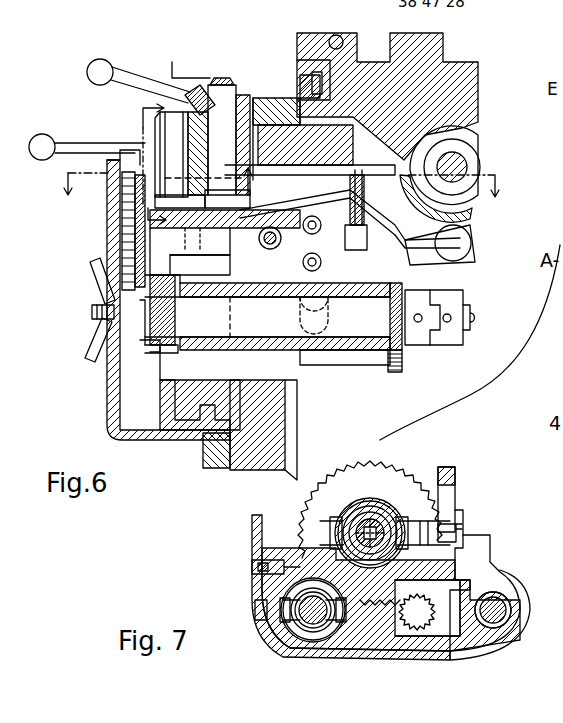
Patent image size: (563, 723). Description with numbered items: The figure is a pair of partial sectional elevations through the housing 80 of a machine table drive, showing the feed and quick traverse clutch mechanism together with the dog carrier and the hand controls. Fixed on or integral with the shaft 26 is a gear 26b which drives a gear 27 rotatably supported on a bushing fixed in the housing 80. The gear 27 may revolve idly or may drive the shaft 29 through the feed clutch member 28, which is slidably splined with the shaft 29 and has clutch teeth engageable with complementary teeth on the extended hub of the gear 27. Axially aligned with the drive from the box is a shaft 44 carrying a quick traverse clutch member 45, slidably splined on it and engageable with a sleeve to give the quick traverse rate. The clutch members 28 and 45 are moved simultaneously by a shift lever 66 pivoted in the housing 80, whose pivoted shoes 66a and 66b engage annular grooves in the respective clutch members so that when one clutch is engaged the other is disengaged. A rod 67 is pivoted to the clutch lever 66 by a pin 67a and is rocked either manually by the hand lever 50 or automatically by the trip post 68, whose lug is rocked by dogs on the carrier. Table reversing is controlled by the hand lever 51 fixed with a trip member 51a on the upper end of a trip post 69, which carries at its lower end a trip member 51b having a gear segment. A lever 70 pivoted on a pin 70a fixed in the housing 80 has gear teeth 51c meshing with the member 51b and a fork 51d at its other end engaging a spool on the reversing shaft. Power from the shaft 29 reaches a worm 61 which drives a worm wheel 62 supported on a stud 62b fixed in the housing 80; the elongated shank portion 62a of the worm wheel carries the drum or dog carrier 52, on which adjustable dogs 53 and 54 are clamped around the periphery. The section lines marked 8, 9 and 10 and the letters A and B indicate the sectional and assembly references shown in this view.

In FIG. 6, the section line / direction indicator 8 is at (146, 180).
In FIG. 6, the section line 9 is at (277, 181).
In FIG. 6, the direction indicator 10 is at (179, 160).
In FIG. 7, the shaft 26 is at (456, 625).
In FIG. 7, the gear 26b is at (445, 640).
In FIG. 7, the gear 27 is at (412, 485).
In FIG. 7, the feed clutch member 28 is at (378, 520).
In FIG. 7, the shaft 29 is at (368, 515).
In FIG. 7, the shaft 44 is at (285, 604).
In FIG. 7, the quick traverse clutch member 45 is at (328, 620).
In FIG. 6, the hand lever 50 is at (43, 135).
In FIG. 6, the hand lever 51 is at (100, 60).
In FIG. 6, the trip member 51a is at (205, 88).
In FIG. 6, the trip member 51b is at (228, 192).
In FIG. 6, the gear teeth 51c is at (260, 181).
In FIG. 6, the fork 51d is at (473, 247).
In FIG. 6, the drum or dog carrier 52 is at (168, 375).
In FIG. 6, the dog 53 is at (160, 215).
In FIG. 6, the dog 54 is at (130, 250).
In FIG. 6, the worm 61 is at (225, 227).
In FIG. 6, the worm wheel 62 is at (248, 470).
In FIG. 6, the elongated shank portion 62a is at (168, 340).
In FIG. 6, the stud 62b is at (172, 322).
In FIG. 6, the shift member or lever 66 is at (328, 315).
In FIG. 7, the shift member or lever 66 is at (302, 560).
In FIG. 7, the pivoted shoe 66a is at (346, 522).
In FIG. 7, the pivoted shoe 66b is at (280, 612).
In FIG. 6, the rod 67 is at (270, 125).
In FIG. 7, the rod 67 is at (456, 473).
In FIG. 7, the pin 67a is at (462, 525).
In FIG. 6, the trip post 68 is at (172, 125).
In FIG. 6, the trip post 69 is at (225, 90).
In FIG. 6, the lever 70 is at (300, 238).
In FIG. 6, the pin 70a is at (380, 248).
In FIG. 6, the housing 80 is at (340, 360).
In FIG. 7, the housing 80 is at (262, 628).
In FIG. 6, the assembly A is at (440, 373).
In FIG. 6, the block B is at (478, 80).